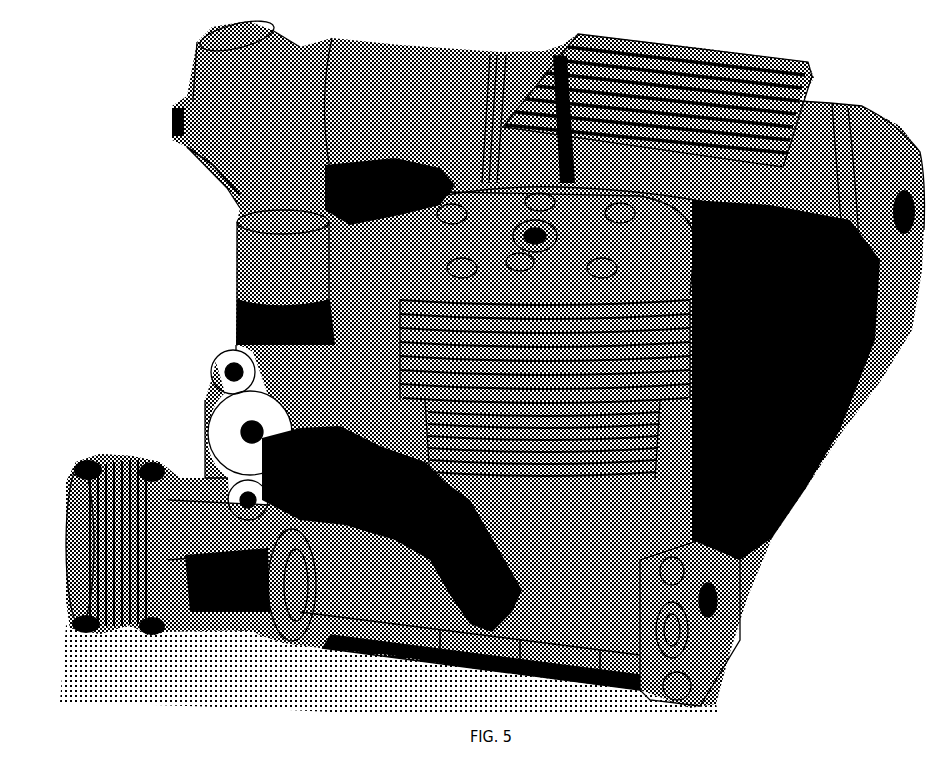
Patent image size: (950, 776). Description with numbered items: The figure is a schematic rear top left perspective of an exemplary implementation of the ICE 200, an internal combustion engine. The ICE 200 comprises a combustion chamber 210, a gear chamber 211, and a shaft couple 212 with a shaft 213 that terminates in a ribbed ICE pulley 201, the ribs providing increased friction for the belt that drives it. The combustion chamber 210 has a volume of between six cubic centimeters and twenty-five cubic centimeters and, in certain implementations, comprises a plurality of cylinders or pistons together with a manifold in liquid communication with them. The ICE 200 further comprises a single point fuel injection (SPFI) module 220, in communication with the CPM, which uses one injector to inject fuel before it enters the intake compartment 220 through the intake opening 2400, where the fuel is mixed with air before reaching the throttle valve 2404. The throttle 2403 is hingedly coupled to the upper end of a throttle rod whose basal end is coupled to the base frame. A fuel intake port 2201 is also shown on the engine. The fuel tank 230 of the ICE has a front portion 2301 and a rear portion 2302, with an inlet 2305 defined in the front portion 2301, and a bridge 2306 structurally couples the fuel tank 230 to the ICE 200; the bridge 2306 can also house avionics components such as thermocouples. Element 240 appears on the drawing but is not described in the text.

The ICE 200 is at (69, 68).
The ICE pulley 201 is at (110, 616).
The combustion chamber 210 is at (713, 447).
The gear chamber 211 is at (583, 673).
The shaft couple 212 is at (280, 628).
The shaft 213 is at (163, 462).
The single point fuel injection (SPFI) module 220 is at (213, 402).
The fuel tank 230 is at (868, 314).
The starter housing 240 is at (240, 323).
The fuel intake port 2201 is at (390, 646).
The front portion 2301 is at (388, 73).
The rear portion 2302 is at (824, 150).
The inlet 2305 is at (200, 37).
The bridge 2306 is at (790, 348).
The intake opening 2400 is at (246, 226).
The throttle 2403 is at (383, 160).
The throttle valve 2404 is at (213, 164).